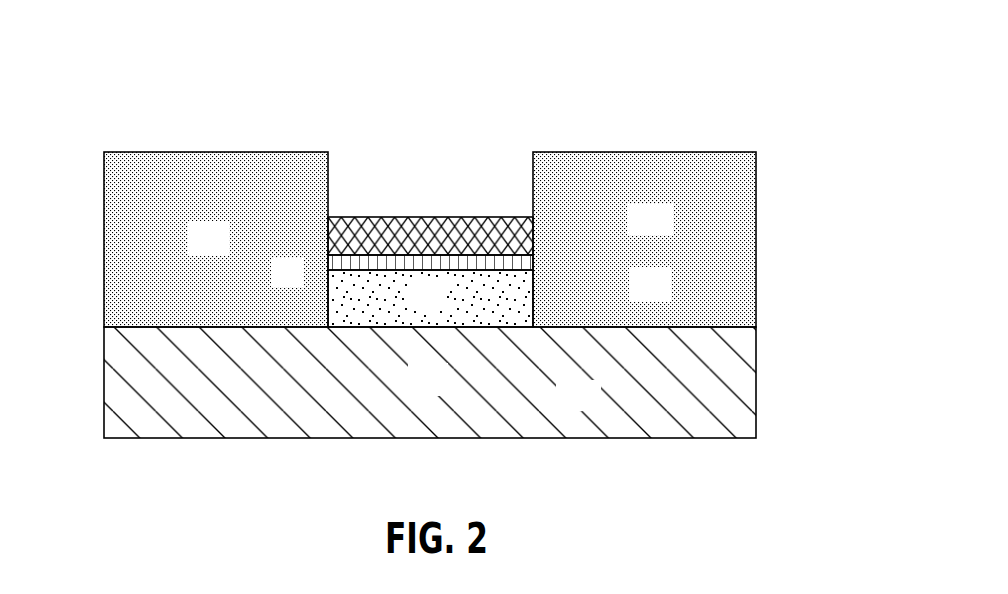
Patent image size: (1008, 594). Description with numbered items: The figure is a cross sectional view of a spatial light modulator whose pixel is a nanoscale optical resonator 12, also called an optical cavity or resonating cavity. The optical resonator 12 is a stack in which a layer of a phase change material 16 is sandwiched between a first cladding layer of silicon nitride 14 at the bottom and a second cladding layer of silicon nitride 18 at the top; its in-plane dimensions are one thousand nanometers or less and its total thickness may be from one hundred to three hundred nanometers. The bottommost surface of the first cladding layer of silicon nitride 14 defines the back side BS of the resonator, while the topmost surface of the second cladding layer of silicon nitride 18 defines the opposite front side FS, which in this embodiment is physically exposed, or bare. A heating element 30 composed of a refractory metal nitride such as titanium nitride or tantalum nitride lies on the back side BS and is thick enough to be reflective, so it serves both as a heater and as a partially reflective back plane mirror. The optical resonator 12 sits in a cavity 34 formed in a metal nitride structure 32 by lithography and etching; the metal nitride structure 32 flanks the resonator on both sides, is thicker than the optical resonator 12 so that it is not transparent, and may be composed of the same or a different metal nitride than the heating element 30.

The optical resonator 12 is at (432, 217).
The first cladding layer of silicon nitride 14 is at (443, 310).
The layer of phase change material 16 is at (493, 262).
The second cladding layer of silicon nitride 18 is at (372, 232).
The heating element 30 is at (442, 393).
The metal nitride structure 32 is at (223, 252).
The cavity 34 is at (435, 148).
The front side FS is at (539, 217).
The back side BS is at (482, 327).